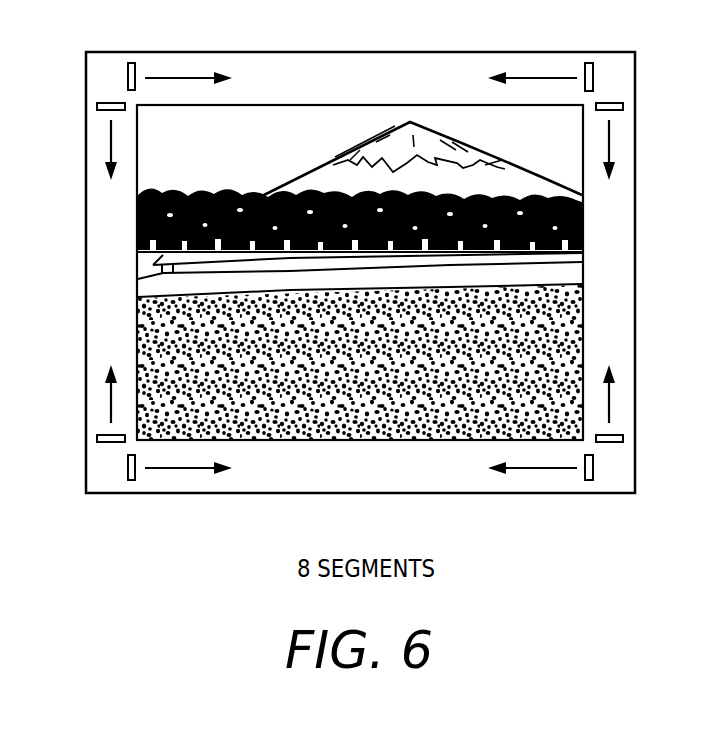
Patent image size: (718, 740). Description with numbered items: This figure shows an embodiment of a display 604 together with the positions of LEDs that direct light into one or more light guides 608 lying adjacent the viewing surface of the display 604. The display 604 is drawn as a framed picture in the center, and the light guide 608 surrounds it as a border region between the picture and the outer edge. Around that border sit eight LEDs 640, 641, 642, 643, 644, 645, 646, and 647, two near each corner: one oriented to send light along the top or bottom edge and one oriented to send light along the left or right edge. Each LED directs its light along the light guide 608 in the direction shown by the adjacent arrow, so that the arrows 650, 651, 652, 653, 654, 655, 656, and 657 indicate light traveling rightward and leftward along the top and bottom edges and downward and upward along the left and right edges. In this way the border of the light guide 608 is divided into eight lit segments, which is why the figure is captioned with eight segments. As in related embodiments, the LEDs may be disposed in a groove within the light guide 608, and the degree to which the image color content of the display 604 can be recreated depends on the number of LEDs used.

The display 604 is at (297, 123).
The light guide 608 is at (622, 234).
The LED 640 is at (132, 60).
The LED 641 is at (587, 60).
The LED 642 is at (625, 107).
The LED 643 is at (625, 439).
The LED 644 is at (587, 482).
The LED 645 is at (131, 482).
The LED 646 is at (97, 439).
The LED 647 is at (97, 106).
The arrow 650 is at (190, 78).
The arrow 651 is at (530, 78).
The arrow 652 is at (609, 141).
The arrow 653 is at (609, 403).
The arrow 654 is at (530, 468).
The arrow 655 is at (187, 468).
The arrow 656 is at (111, 402).
The arrow 657 is at (111, 141).